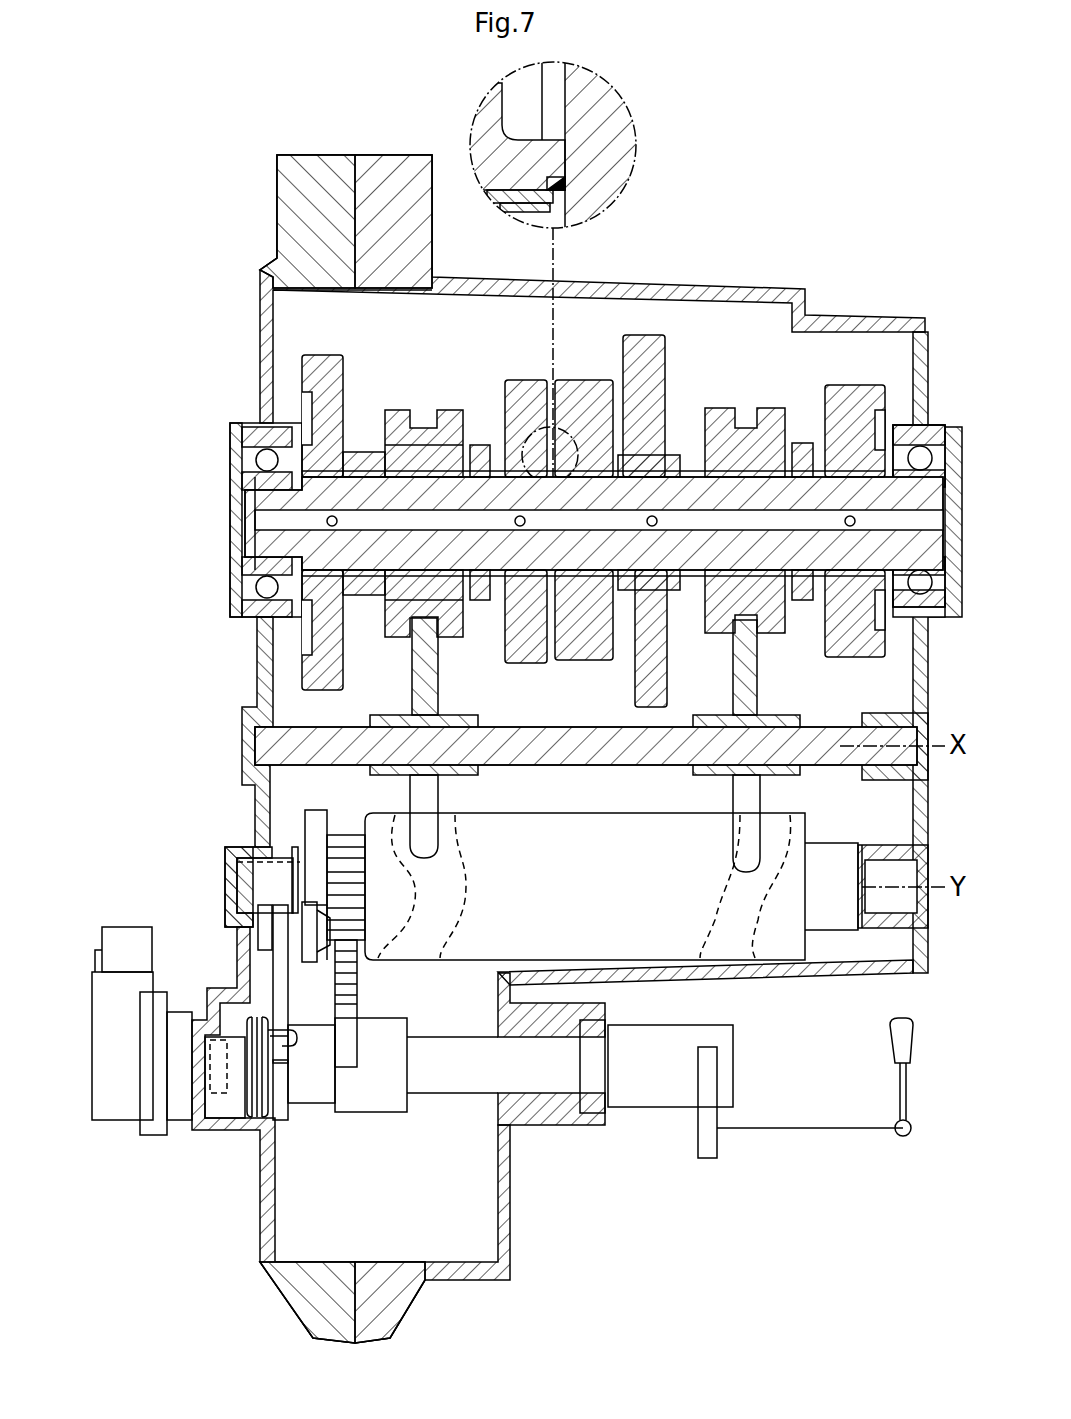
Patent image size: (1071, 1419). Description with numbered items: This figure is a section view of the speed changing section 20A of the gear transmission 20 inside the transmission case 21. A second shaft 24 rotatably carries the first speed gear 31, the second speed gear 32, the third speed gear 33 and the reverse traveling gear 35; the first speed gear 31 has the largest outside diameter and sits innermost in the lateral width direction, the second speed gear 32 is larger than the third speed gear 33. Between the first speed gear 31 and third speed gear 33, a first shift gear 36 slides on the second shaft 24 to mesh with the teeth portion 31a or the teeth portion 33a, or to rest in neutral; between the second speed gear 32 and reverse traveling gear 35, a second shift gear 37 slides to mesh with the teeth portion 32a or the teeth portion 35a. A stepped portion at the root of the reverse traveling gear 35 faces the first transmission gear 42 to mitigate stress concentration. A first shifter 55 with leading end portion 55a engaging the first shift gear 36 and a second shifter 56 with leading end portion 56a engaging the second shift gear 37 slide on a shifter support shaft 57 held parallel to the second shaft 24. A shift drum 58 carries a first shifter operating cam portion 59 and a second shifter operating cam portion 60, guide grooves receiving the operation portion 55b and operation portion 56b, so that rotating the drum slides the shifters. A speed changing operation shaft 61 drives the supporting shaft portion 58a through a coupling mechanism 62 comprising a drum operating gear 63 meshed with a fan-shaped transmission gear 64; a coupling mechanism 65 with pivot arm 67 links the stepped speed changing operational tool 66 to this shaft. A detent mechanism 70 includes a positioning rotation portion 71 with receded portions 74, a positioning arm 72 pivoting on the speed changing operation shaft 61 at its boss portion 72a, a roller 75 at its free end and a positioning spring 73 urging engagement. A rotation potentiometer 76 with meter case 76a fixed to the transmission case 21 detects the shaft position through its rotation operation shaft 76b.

The speed changing section 20A is at (594, 378).
The gear transmission 20 is at (594, 378).
The transmission case 21 is at (893, 320).
The second shaft 24 is at (740, 500).
The first speed gear 31 is at (640, 345).
The teeth portion 31a is at (675, 460).
The second speed gear 32 is at (325, 365).
The teeth portion 32a is at (360, 455).
The third speed gear 33 is at (855, 400).
The teeth portion 33a is at (800, 450).
The reverse traveling gear 35 is at (490, 125).
The teeth portion 35a is at (480, 450).
The first shift gear 36 is at (760, 420).
The second shift gear 37 is at (445, 415).
The first transmission gear 42 is at (612, 118).
The first shifter 55 is at (750, 675).
The leading end portion 55a is at (735, 670).
The operation portion 55b is at (750, 820).
The second shifter 56 is at (432, 675).
The leading end portion 56a is at (412, 668).
The operation portion 56b is at (440, 820).
The shifter support shaft 57 is at (590, 768).
The shift drum 58 is at (655, 914).
The supporting shaft portion 58a is at (248, 860).
The first shifter operating cam portion 59 is at (710, 920).
The second shifter operating cam portion 60 is at (440, 915).
The speed changing operation shaft 61 is at (560, 1060).
The coupling mechanism 62 is at (395, 990).
The drum operating gear 63 is at (340, 848).
The transmission gear 64 is at (348, 1030).
The coupling mechanism 65 is at (822, 1130).
The stepped speed changing operational tool 66 is at (902, 1075).
The pivot arm 67 is at (700, 1130).
The detent mechanism 70 is at (241, 1041).
The positioning rotation portion 71 is at (316, 825).
The positioning arm 72 is at (280, 960).
The boss portion 72a is at (285, 1105).
The positioning spring 73 is at (262, 1050).
The receded portion 74 is at (235, 832).
The roller 75 is at (315, 955).
The rotation potentiometer 76 is at (164, 1017).
The meter case 76a is at (150, 1100).
The rotation operation shaft 76b is at (215, 1095).